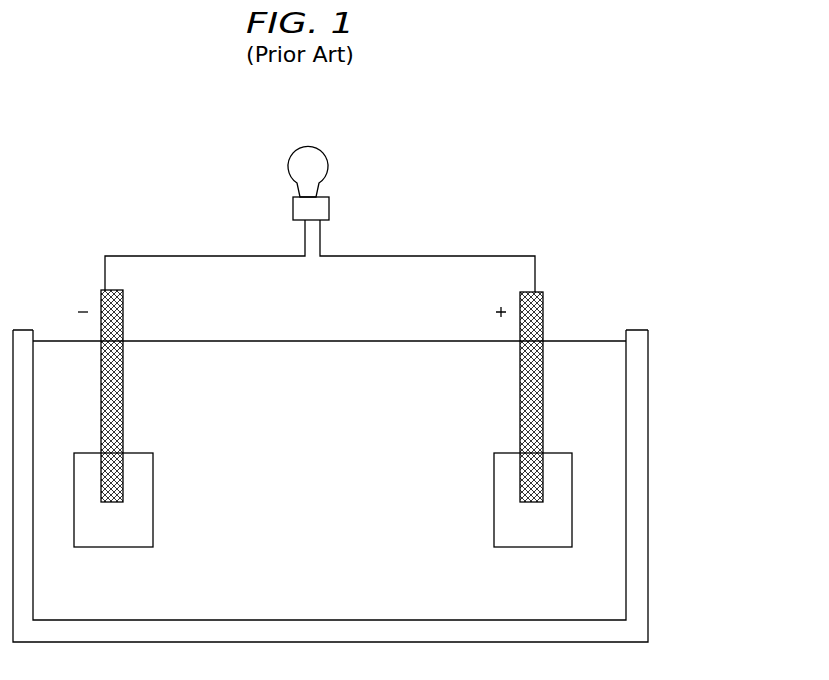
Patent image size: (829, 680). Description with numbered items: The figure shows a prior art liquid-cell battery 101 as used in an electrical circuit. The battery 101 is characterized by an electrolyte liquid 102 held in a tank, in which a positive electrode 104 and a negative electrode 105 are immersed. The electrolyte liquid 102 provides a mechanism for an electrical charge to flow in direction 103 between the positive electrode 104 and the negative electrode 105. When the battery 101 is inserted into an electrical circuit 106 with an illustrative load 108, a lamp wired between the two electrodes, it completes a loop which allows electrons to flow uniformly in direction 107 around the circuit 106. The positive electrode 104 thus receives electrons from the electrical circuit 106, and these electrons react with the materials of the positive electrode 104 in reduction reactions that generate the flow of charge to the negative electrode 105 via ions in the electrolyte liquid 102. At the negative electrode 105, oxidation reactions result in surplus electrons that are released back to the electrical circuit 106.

The liquid-cell battery 101 is at (763, 200).
The electrolyte liquid 102 is at (392, 341).
The direction of charge flow 103 is at (283, 498).
The positive electrode 104 is at (546, 316).
The negative electrode 105 is at (128, 315).
The electrical circuit 106 is at (270, 256).
The direction of electron flow 107 is at (175, 239).
The load 108 is at (328, 153).